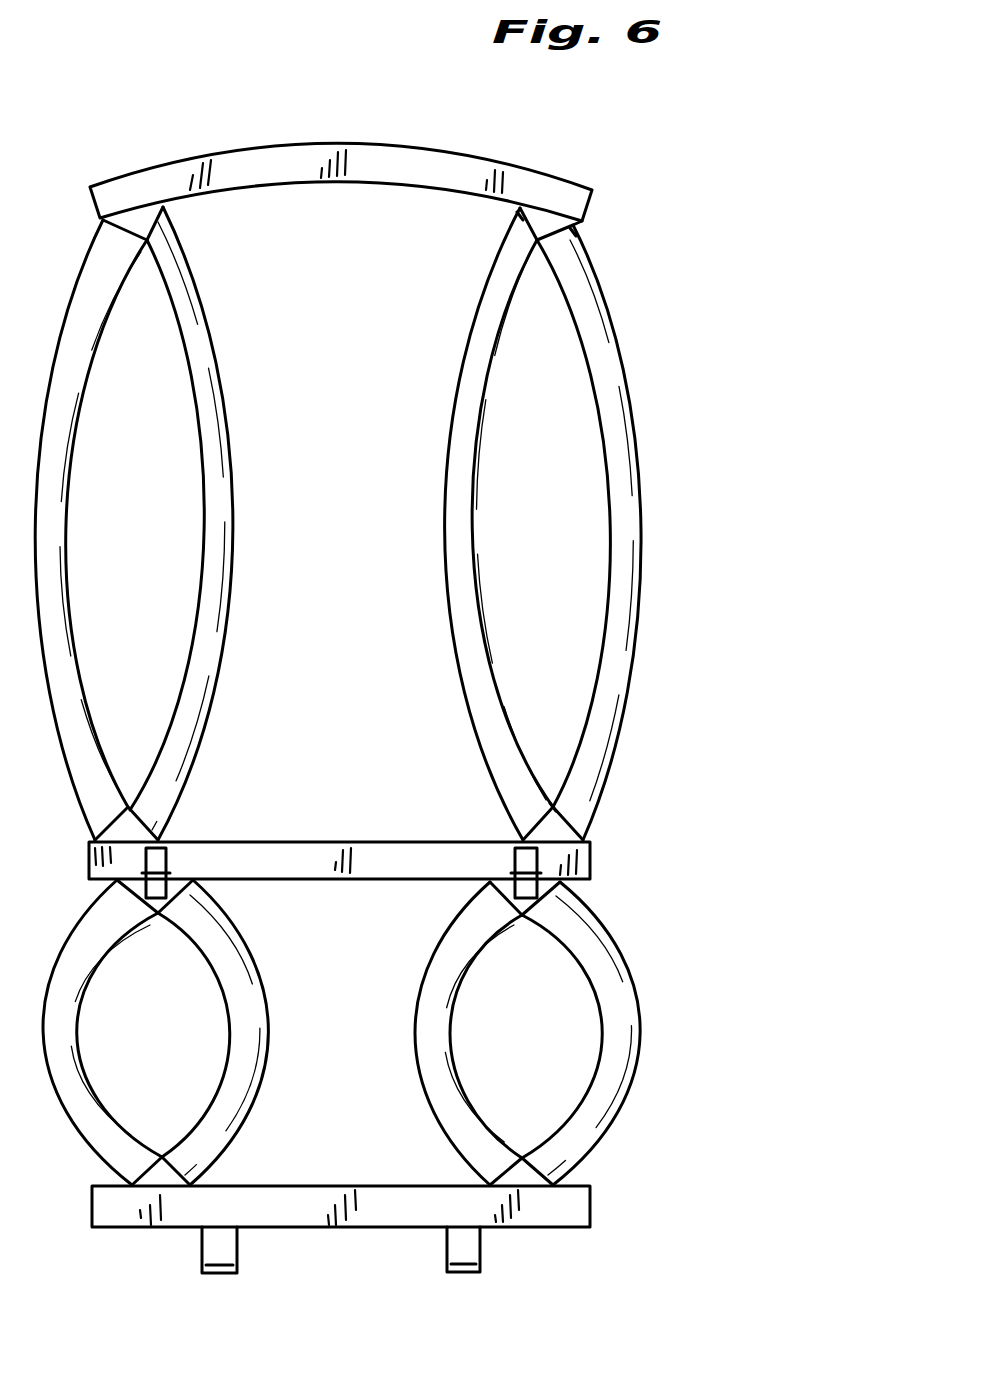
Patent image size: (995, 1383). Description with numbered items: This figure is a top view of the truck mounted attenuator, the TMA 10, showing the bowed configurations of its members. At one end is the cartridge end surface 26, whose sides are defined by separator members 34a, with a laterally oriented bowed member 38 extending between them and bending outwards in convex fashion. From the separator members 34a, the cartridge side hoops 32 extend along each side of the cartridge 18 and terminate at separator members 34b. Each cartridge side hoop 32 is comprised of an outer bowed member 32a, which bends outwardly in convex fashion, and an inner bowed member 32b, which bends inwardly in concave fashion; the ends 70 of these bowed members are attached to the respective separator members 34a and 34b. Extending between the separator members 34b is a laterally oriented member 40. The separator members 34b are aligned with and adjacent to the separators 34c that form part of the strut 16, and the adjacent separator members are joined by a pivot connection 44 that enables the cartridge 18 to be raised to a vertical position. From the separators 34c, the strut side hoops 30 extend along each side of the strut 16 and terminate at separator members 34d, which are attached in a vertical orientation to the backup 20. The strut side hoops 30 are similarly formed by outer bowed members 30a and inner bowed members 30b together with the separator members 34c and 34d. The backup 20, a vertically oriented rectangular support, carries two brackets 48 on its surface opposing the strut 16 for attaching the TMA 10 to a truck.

The TMA 10 is at (541, 130).
The strut 16 is at (347, 1067).
The cartridge 18 is at (357, 544).
The backup 20 is at (345, 1188).
The cartridge end surface 26 is at (358, 136).
The strut side hoops 30 is at (648, 958).
The outer bowed member 30a is at (640, 1032).
The inner bowed member 30b is at (420, 1012).
The cartridge side hoops 32 is at (660, 464).
The outer bowed member 32a is at (637, 530).
The inner bowed member 32b is at (452, 472).
The separator members 34a is at (582, 222).
The separator members 34b is at (583, 836).
The separators 34c is at (488, 884).
The separator members 34d is at (522, 1157).
The bowed members 38 is at (450, 163).
The laterally oriented members 40 is at (370, 858).
The pivot connection 44 is at (170, 862).
The brackets 48 is at (455, 1250).
The ends 70 is at (520, 208).